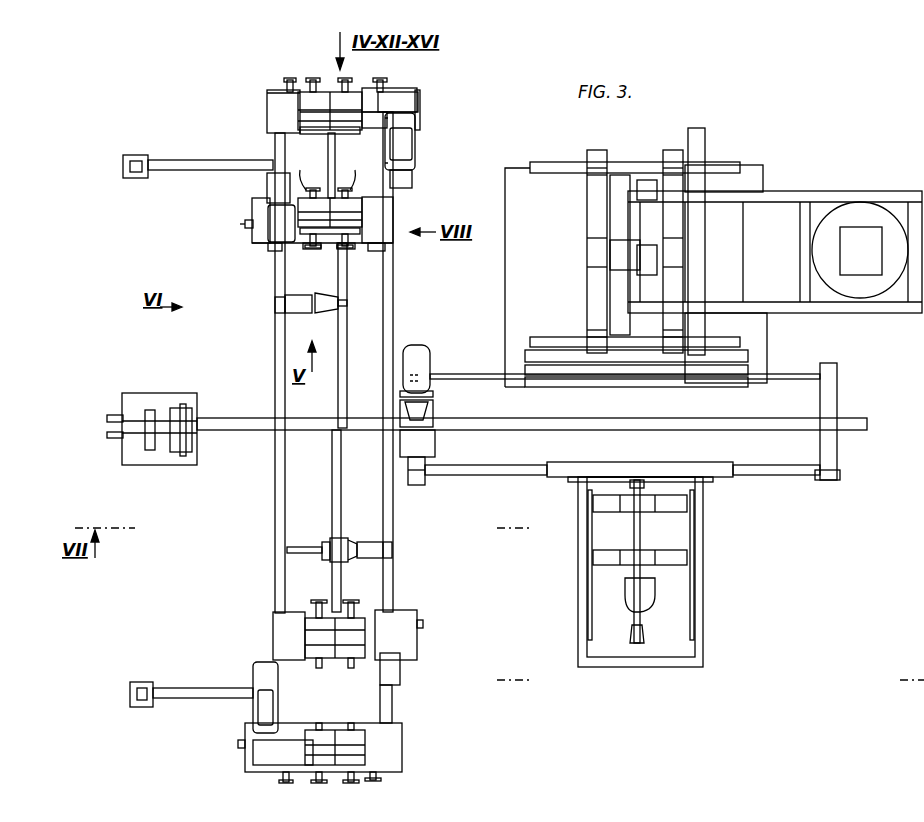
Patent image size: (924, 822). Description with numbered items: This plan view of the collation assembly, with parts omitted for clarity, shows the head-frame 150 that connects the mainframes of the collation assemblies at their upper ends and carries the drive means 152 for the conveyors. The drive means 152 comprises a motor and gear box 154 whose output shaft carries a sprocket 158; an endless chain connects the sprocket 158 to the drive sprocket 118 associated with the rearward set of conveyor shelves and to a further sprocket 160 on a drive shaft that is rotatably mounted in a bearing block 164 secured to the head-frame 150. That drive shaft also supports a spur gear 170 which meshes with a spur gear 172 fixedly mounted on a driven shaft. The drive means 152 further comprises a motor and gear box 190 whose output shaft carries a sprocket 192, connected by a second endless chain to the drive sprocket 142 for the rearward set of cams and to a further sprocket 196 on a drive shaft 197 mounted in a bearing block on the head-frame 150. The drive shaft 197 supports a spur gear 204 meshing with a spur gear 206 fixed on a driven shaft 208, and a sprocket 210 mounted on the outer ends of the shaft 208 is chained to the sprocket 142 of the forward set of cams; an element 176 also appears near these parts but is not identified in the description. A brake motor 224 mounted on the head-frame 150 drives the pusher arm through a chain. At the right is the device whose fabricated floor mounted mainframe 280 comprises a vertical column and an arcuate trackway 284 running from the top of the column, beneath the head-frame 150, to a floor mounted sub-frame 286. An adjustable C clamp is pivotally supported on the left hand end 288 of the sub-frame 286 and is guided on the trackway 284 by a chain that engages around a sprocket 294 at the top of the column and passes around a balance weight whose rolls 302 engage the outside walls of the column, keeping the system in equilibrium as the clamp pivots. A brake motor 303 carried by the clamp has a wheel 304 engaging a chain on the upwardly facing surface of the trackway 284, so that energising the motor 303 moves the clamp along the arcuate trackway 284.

The drive sprocket 118 is at (290, 78).
The drive sprocket 142 is at (378, 250).
The head-frame 150 is at (392, 314).
The drive means 152 is at (238, 138).
The motor and gear box 154 is at (422, 118).
The sprocket 158 is at (383, 80).
The further sprocket 160 is at (348, 80).
The bearing block 164 is at (285, 95).
The spur gear 170 is at (368, 115).
The spur gear 172 is at (318, 110).
The bolt 176 is at (330, 78).
The motor and gear box 190 is at (240, 184).
The sprocket 192 is at (275, 245).
The further sprocket 196 is at (310, 250).
The drive shaft 197 is at (304, 166).
The spur gear 204 is at (272, 218).
The spur gear 206 is at (350, 216).
The driven shaft 208 is at (354, 166).
The sprocket 210 is at (346, 252).
The brake motor 224 is at (292, 310).
The mainframe 280 is at (852, 413).
The arcuate trackway 284 is at (730, 416).
The sub-frame 286 is at (785, 480).
The left hand end 288 is at (436, 481).
The sprocket 294 is at (184, 395).
The rolls 302 is at (108, 436).
The brake motor 303 is at (422, 352).
The wheel 304 is at (438, 427).